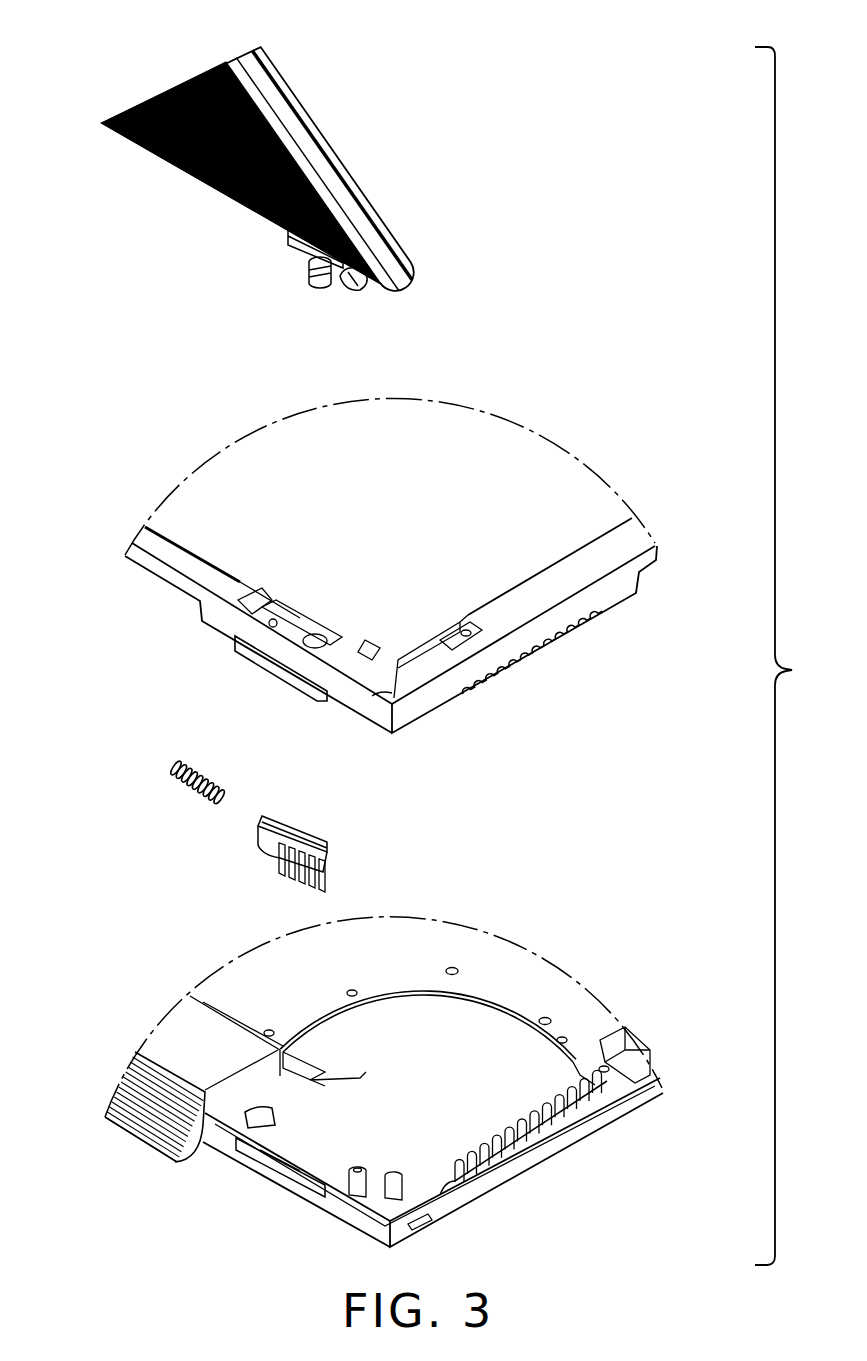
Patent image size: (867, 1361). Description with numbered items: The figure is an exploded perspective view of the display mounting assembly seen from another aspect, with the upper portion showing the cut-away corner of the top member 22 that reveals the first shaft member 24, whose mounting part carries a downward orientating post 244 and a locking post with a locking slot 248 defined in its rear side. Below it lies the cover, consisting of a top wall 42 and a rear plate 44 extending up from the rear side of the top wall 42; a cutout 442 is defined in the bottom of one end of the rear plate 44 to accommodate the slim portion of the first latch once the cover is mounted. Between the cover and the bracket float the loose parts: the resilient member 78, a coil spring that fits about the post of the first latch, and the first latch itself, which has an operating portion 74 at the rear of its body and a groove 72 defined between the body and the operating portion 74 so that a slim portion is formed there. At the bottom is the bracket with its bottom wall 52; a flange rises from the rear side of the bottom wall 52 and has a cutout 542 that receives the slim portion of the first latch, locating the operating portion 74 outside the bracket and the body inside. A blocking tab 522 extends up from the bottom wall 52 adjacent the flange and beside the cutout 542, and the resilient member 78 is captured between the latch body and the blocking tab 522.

The cover 22 is at (325, 168).
The first shaft member 24 is at (290, 237).
The orientating post 244 is at (352, 283).
The locking slot 248 is at (308, 264).
The top wall 42 is at (492, 471).
The rear plate 44 is at (372, 704).
The cutout 442 is at (293, 678).
The groove 72 is at (318, 855).
The operating portion 74 is at (278, 858).
The resilient member 78 is at (172, 783).
The bottom wall 52 is at (503, 1105).
The blocking tab 522 is at (265, 1120).
The cutout 542 is at (283, 1155).